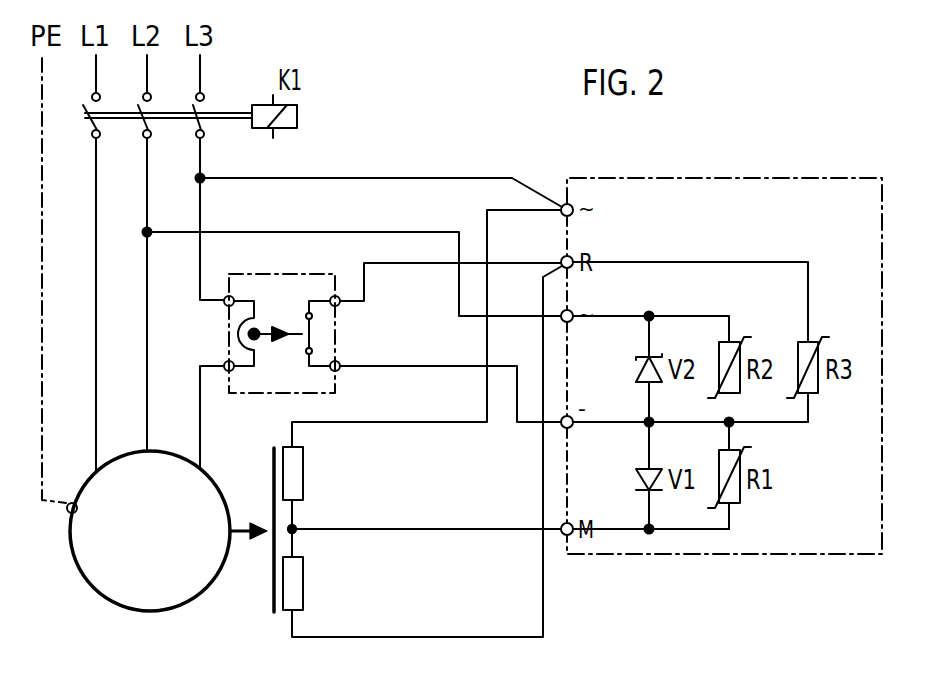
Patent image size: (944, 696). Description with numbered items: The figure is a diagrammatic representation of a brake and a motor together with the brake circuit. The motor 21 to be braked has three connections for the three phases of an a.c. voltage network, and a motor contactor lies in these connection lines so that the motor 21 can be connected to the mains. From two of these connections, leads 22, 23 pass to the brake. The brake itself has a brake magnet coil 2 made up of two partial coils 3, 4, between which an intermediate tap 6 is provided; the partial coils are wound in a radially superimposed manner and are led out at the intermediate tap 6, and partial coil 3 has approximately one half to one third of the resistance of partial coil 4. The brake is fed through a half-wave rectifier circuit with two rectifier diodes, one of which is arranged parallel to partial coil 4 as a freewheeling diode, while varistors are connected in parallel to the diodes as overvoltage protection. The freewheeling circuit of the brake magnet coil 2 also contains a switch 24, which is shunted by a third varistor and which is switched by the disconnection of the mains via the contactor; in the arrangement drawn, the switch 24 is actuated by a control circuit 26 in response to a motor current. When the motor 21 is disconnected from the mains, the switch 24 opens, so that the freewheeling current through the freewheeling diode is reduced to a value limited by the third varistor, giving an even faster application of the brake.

The brake magnet coil 2 is at (258, 611).
The partial coil 3 is at (300, 470).
The partial coil 4 is at (289, 610).
The intermediate tap 6 is at (297, 530).
The motor 21 is at (117, 580).
The lead 22 is at (395, 177).
The lead 23 is at (392, 232).
The switch 24 is at (308, 284).
The control circuit 26 is at (253, 380).